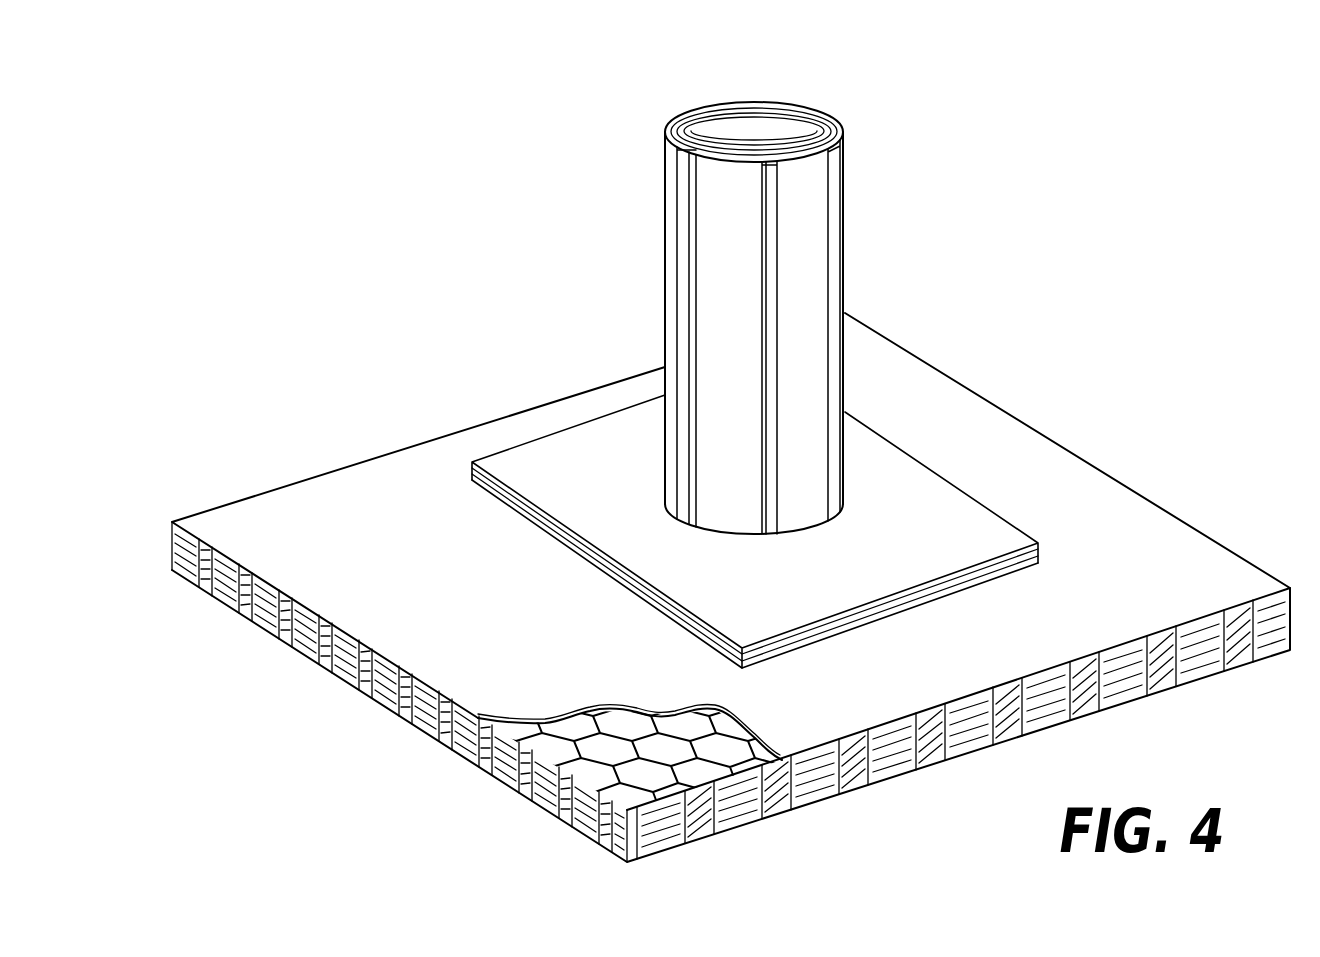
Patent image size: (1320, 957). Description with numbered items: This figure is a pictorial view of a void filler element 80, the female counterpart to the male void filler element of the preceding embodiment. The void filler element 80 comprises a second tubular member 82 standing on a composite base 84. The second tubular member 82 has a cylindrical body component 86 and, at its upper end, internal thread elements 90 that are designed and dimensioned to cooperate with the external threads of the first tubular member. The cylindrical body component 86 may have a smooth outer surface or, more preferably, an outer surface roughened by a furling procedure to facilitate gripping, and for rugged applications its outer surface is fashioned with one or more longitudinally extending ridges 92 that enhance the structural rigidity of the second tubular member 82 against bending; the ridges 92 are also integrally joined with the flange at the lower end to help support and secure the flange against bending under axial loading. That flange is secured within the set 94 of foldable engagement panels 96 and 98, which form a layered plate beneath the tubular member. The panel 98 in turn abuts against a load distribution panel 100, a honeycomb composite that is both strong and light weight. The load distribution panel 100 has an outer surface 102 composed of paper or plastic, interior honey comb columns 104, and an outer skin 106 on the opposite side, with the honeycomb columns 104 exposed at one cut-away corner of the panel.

The void filler element 80 is at (962, 253).
The second tubular member 82 is at (812, 207).
The composite base 84 is at (1218, 578).
The cylindrical body component 86 is at (716, 313).
The internal thread elements 90 is at (787, 123).
The longitudinally extending ridges 92 is at (838, 367).
The set of foldable engagement panels 94 is at (950, 504).
The foldable engagement panel 96 is at (727, 653).
The foldable engagement panel 98 is at (1025, 556).
The load distribution panel 100 is at (222, 500).
The outer surface 102 is at (468, 622).
The interior honey comb columns 104 is at (526, 792).
The outer skin 106 is at (1167, 687).